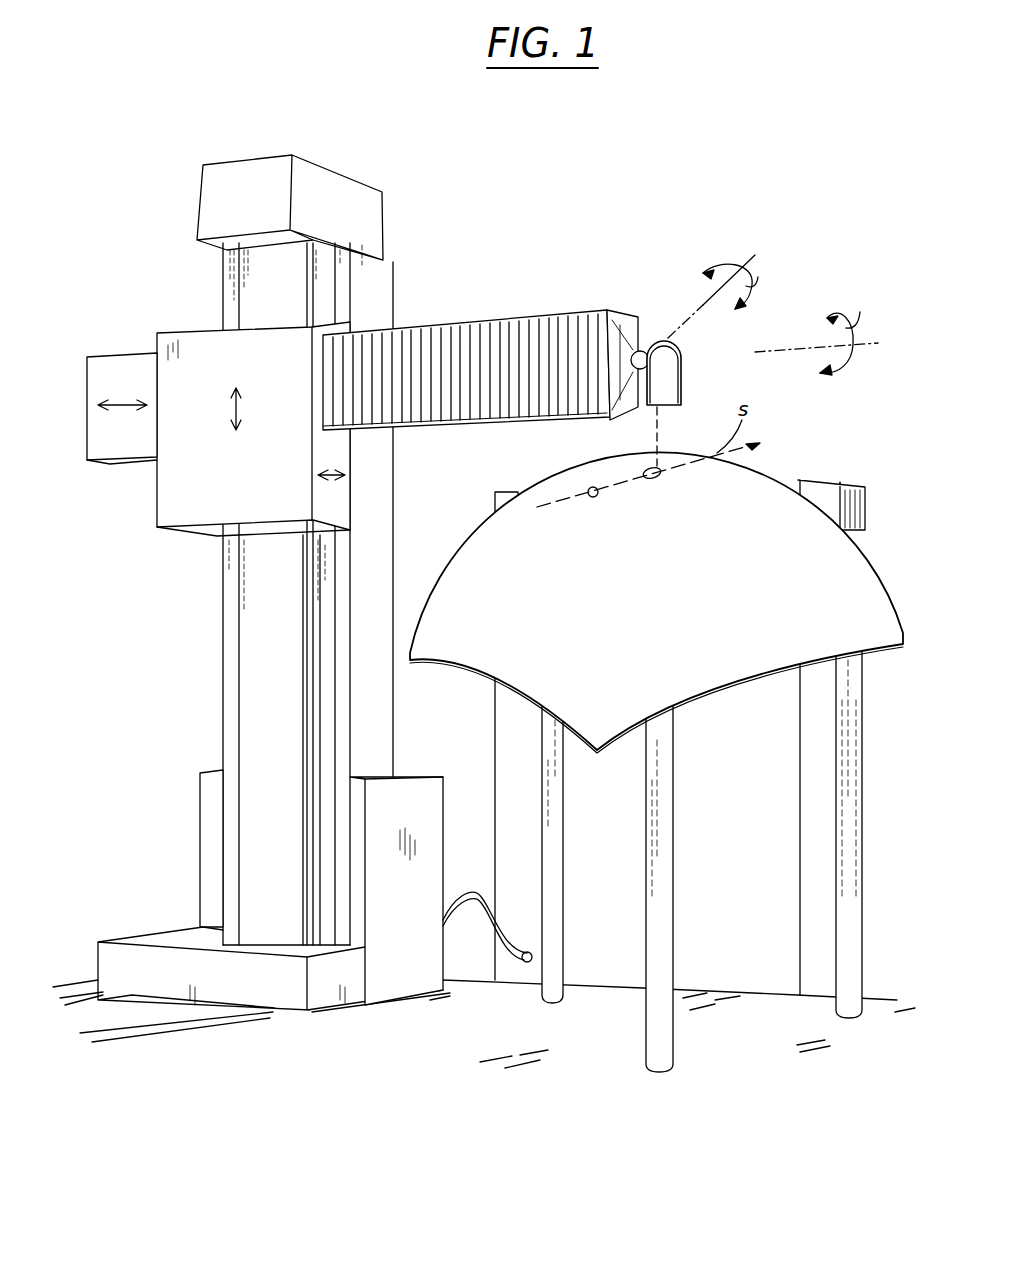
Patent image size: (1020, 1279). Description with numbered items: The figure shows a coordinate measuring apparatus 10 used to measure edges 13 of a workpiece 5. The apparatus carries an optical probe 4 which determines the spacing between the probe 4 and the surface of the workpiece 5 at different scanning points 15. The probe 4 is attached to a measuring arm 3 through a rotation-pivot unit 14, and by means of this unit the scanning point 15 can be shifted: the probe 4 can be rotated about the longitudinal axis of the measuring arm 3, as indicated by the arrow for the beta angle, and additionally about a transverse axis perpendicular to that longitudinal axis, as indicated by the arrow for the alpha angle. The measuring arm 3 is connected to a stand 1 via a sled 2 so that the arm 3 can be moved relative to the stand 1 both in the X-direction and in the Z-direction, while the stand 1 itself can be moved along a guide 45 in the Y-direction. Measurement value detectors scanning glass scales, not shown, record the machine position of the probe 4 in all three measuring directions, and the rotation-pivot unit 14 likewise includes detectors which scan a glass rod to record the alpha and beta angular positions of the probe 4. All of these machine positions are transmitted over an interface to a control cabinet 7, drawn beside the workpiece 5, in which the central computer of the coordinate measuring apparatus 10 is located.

The stand 1 is at (390, 263).
The sled 2 is at (202, 343).
The measuring arm 3 is at (478, 332).
The optical probe 4 is at (682, 383).
The workpiece 5 is at (768, 487).
The control cabinet 7 is at (842, 492).
The coordinate measuring apparatus 10 is at (543, 258).
The edges 13 is at (462, 542).
The rotation-pivot unit 14 is at (680, 347).
The scanning point 15 is at (680, 436).
The guide 45 is at (140, 1007).